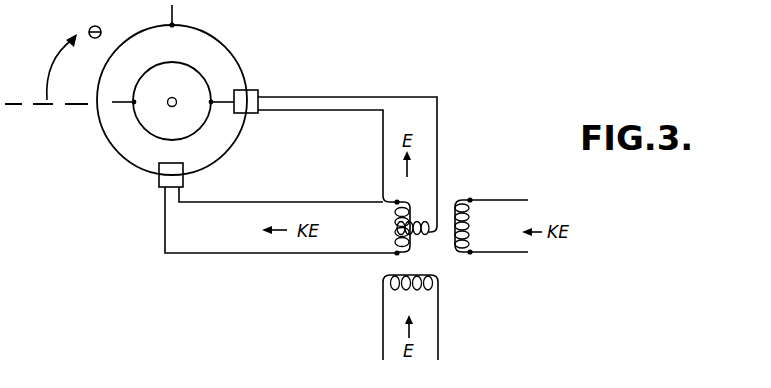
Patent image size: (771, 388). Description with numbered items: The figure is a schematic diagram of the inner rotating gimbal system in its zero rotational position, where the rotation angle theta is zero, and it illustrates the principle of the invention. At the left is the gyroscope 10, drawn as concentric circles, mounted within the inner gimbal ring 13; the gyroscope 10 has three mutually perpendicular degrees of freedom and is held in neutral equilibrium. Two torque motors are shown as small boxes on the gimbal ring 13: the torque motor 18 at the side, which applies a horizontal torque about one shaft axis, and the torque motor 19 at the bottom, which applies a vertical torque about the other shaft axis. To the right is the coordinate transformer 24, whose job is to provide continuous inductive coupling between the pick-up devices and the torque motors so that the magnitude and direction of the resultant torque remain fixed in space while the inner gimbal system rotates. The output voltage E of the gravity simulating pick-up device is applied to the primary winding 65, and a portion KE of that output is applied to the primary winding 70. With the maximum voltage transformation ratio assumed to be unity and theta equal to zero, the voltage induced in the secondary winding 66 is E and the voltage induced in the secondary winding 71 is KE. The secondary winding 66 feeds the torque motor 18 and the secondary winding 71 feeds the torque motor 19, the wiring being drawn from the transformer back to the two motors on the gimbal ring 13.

The gyroscope 10 is at (180, 62).
The inner gimbal ring 13 is at (233, 50).
The torque motor 18 is at (256, 88).
The torque motor 19 is at (157, 181).
The coordinate transformer 24 is at (452, 194).
The primary winding 65 is at (395, 289).
The secondary winding 66 is at (424, 235).
The primary winding 70 is at (468, 229).
The secondary winding 71 is at (397, 241).